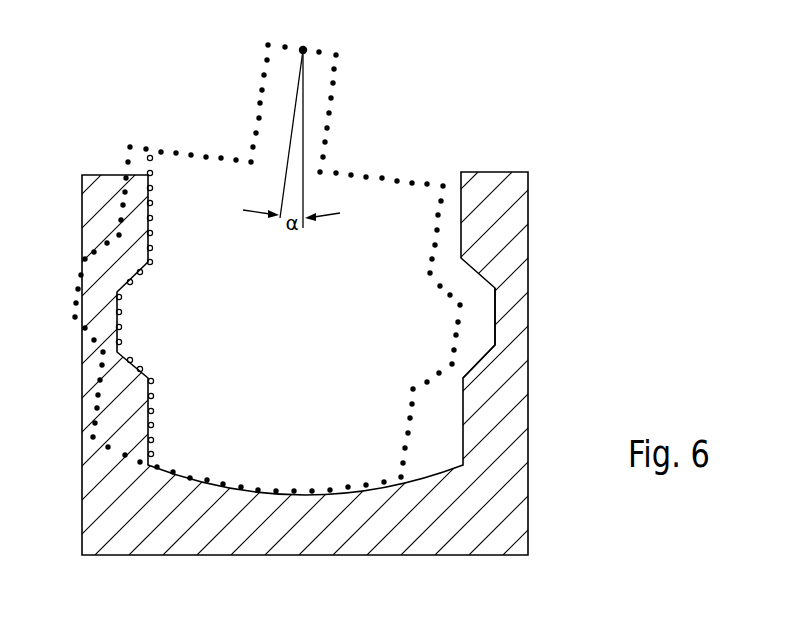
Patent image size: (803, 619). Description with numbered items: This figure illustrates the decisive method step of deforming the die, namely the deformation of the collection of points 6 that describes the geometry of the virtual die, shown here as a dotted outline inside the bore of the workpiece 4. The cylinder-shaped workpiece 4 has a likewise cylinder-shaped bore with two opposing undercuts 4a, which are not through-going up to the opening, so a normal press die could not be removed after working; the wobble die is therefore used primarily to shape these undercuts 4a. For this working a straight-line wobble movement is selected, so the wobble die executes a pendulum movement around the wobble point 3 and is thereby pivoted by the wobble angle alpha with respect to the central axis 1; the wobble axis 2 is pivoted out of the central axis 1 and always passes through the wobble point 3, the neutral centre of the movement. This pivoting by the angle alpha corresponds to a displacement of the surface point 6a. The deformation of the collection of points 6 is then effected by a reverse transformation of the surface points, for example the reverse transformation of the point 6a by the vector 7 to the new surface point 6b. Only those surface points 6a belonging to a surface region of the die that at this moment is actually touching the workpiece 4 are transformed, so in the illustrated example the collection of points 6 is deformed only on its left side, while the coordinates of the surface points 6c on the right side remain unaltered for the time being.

The central axis 1 is at (305, 203).
The wobble axis 2 is at (283, 175).
The wobble point 3 is at (307, 47).
The workpiece 4 is at (520, 252).
The undercut 4a is at (488, 327).
The collection of points 6 is at (382, 177).
The surface point 6a is at (136, 417).
The new surface point 6b is at (153, 422).
The surface points on the right side 6c is at (455, 322).
The vector 7 is at (125, 413).